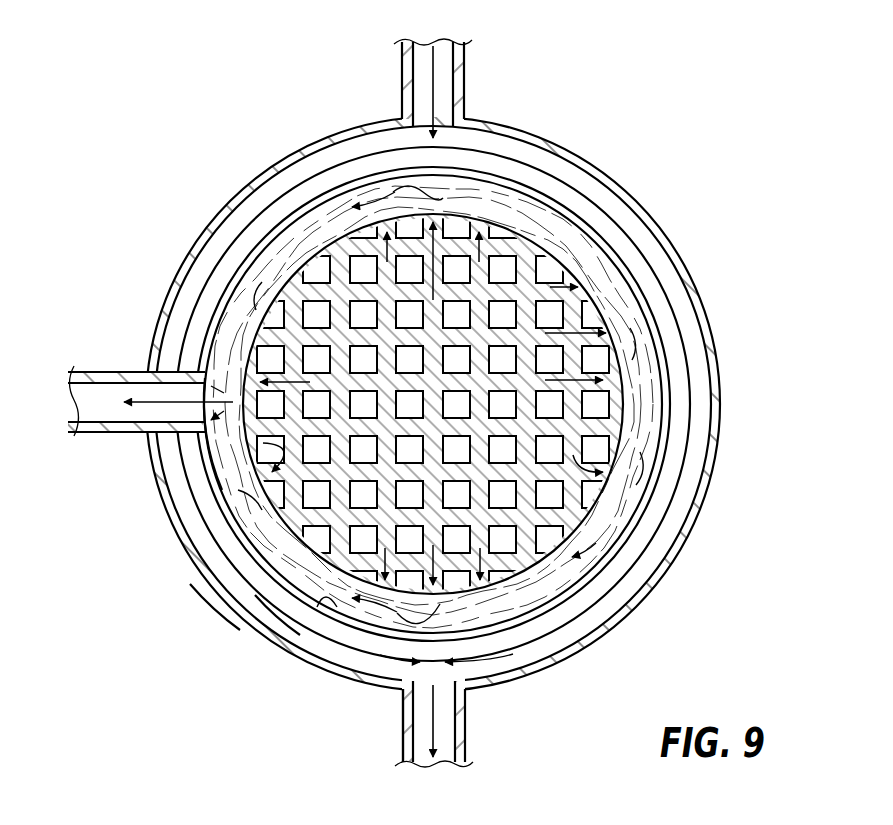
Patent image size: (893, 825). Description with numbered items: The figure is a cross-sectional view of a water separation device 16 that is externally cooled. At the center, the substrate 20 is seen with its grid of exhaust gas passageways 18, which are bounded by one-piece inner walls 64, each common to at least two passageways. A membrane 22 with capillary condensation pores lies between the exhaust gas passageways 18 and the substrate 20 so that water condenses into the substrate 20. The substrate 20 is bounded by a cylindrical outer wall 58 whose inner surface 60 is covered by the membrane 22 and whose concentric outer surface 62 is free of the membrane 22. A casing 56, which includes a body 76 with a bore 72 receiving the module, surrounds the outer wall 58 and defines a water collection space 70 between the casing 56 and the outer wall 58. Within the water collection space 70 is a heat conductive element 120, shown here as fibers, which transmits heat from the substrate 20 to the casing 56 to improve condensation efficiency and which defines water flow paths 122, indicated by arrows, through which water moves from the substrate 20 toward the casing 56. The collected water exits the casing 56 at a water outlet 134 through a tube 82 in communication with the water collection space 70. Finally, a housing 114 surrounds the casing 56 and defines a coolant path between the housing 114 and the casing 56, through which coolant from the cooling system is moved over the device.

The water separation device 16 is at (547, 84).
The exhaust gas passageways 18 is at (602, 409).
The substrate 20 is at (337, 470).
The membrane 22 is at (505, 316).
The casing 56 is at (573, 592).
The outer wall 58 is at (277, 613).
The inner surface 60 is at (240, 448).
The outer surface 62 is at (232, 443).
The inner walls 64 is at (338, 367).
The water collection space 70 is at (473, 613).
The bore 72 is at (308, 645).
The body 76 is at (222, 590).
The tube 82 is at (112, 373).
The housing 114 is at (675, 560).
The heat conductive element 120 is at (637, 493).
The water flow paths 122 is at (393, 192).
The water outlet 134 is at (406, 723).